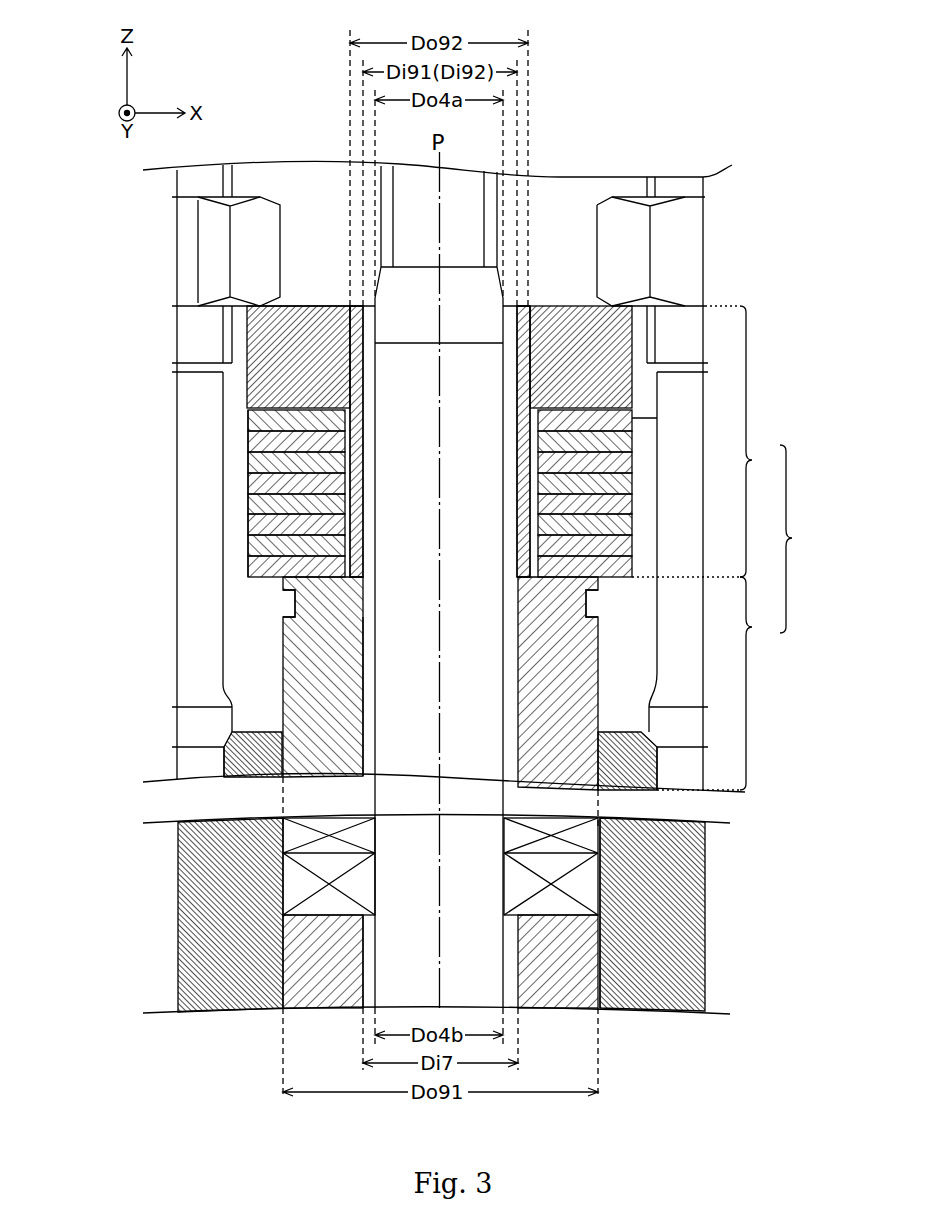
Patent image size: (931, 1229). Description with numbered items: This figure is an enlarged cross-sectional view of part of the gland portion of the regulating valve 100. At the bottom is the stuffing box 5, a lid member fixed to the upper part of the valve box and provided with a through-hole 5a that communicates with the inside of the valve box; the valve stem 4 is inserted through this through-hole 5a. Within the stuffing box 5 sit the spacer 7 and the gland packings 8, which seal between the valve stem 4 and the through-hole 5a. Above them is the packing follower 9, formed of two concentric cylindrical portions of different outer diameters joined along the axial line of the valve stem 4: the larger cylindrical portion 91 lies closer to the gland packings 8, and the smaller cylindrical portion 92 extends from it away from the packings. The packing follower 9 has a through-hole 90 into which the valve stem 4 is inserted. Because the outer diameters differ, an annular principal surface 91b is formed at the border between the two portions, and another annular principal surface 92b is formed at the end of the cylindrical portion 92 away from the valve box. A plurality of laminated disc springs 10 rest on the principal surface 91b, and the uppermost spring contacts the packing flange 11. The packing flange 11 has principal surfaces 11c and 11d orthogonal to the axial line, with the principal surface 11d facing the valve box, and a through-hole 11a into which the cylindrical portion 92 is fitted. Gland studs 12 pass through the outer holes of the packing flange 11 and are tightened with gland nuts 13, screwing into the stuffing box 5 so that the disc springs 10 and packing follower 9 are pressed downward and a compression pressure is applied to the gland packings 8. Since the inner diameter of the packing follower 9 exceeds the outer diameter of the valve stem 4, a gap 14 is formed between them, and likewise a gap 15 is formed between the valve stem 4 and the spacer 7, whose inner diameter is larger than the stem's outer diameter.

The regulating valve 100 is at (764, 86).
The gland nuts 13 is at (190, 242).
The gland studs 12 is at (193, 449).
The packing flange 11 is at (247, 340).
The through-hole 11a is at (358, 303).
The principal surface 11c is at (297, 306).
The principal surface 11d is at (248, 428).
The disc springs 10 is at (258, 505).
The principal surface 91b is at (287, 562).
The cylindrical portion 92 is at (563, 441).
The principal surface 92b is at (524, 302).
The cylindrical portion 91 is at (531, 683).
The packing follower 9 is at (794, 539).
The through-hole 90 is at (512, 602).
The valve stem 4 is at (400, 602).
The gap 14 is at (370, 660).
The gland packings 8 is at (290, 882).
The spacer 7 is at (300, 945).
The gap 15 is at (370, 985).
The stuffing box 5 is at (696, 973).
The through-hole 5a is at (600, 945).